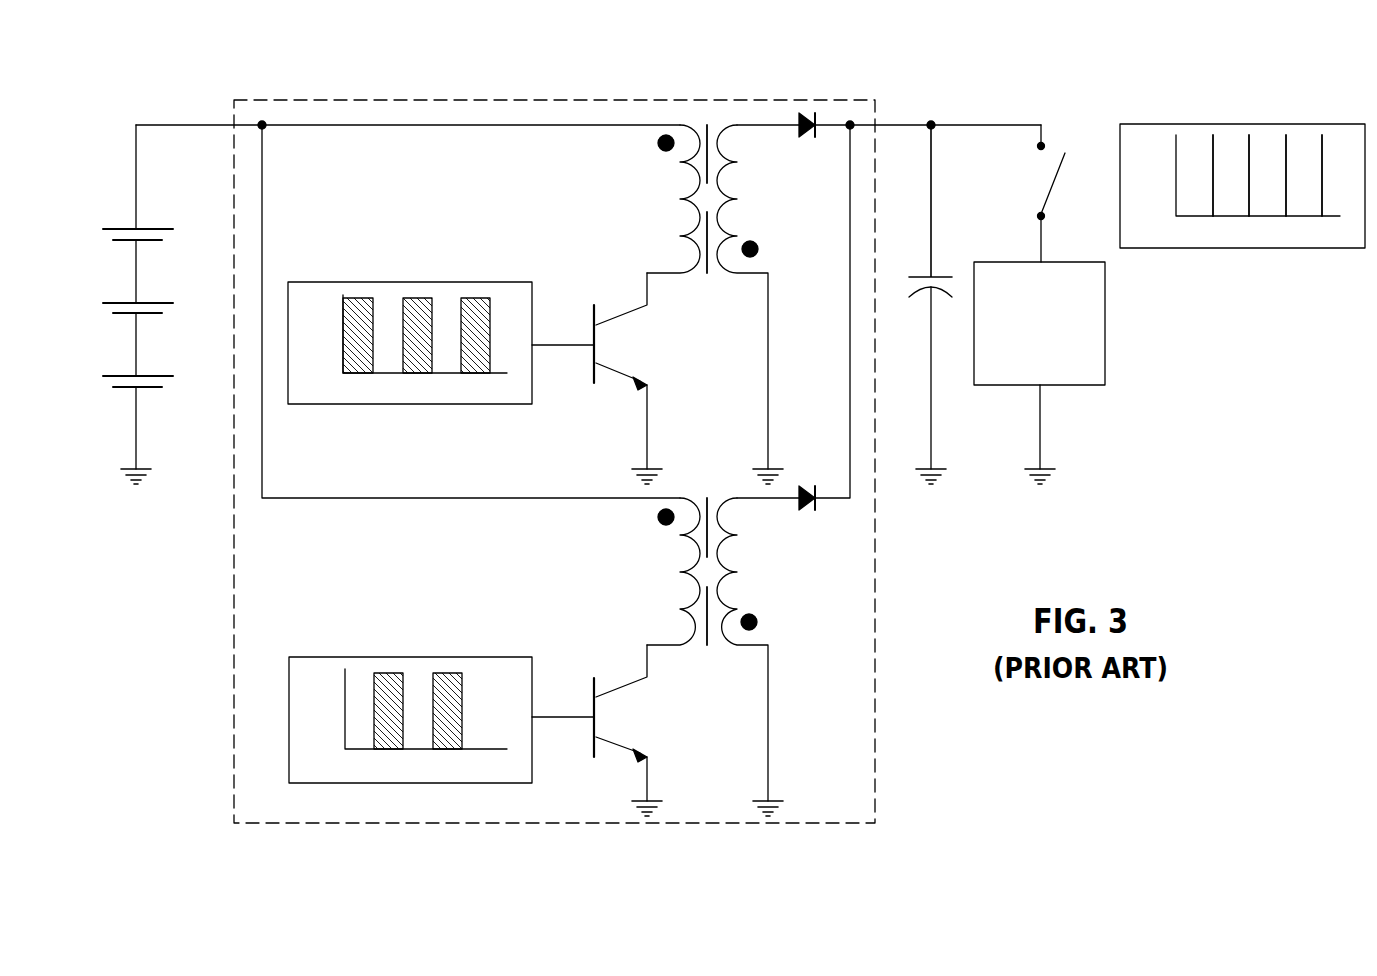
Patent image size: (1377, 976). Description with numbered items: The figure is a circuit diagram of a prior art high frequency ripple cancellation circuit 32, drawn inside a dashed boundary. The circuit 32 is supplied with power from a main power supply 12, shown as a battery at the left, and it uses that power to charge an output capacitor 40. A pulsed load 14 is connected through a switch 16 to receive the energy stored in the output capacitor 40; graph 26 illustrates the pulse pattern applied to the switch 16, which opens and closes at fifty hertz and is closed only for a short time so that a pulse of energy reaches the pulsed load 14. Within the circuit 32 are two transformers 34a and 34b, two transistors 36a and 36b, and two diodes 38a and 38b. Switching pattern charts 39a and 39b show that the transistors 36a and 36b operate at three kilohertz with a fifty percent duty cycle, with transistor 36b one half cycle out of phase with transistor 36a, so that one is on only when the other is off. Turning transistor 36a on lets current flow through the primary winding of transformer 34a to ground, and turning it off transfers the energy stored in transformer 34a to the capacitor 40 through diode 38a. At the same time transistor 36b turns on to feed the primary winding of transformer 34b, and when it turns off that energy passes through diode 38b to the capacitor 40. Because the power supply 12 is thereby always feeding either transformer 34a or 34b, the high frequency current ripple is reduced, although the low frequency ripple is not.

The main power supply 12 is at (150, 296).
The pulsed load 14 is at (1106, 322).
The switch 16 is at (1062, 163).
The graph 26 is at (1243, 124).
The HF ripple cancellation circuit 32 is at (556, 100).
The transformer 34a is at (666, 173).
The transformer 34b is at (666, 547).
The transistor 36a is at (592, 314).
The transistor 36b is at (592, 688).
The diode 38a is at (808, 138).
The diode 38b is at (808, 511).
The switching pattern chart 39a is at (410, 282).
The switching pattern chart 39b is at (410, 657).
The output capacitor 40 is at (915, 277).